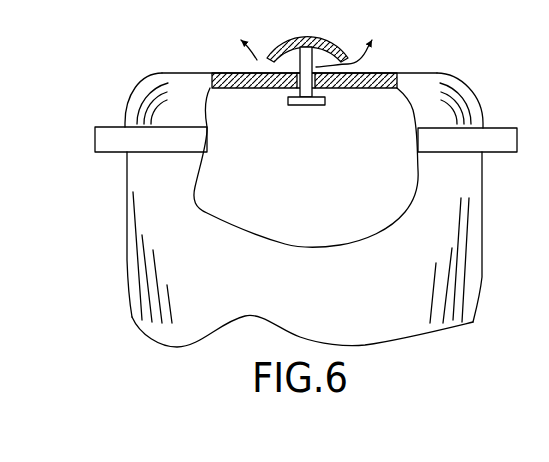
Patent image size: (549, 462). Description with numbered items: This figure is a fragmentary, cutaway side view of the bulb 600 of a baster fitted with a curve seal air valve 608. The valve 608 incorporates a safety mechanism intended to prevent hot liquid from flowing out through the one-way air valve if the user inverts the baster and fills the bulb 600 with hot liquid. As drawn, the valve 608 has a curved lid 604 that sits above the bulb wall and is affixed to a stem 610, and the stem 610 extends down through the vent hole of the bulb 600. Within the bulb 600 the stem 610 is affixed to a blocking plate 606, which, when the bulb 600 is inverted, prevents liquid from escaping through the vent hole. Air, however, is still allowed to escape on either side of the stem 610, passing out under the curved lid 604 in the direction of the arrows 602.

The bulb 600 is at (150, 214).
The arrows 602 is at (296, 67).
The curved lid 604 is at (344, 39).
The blocking plate 606 is at (307, 105).
The valve 608 is at (308, 37).
The stem 610 is at (308, 89).